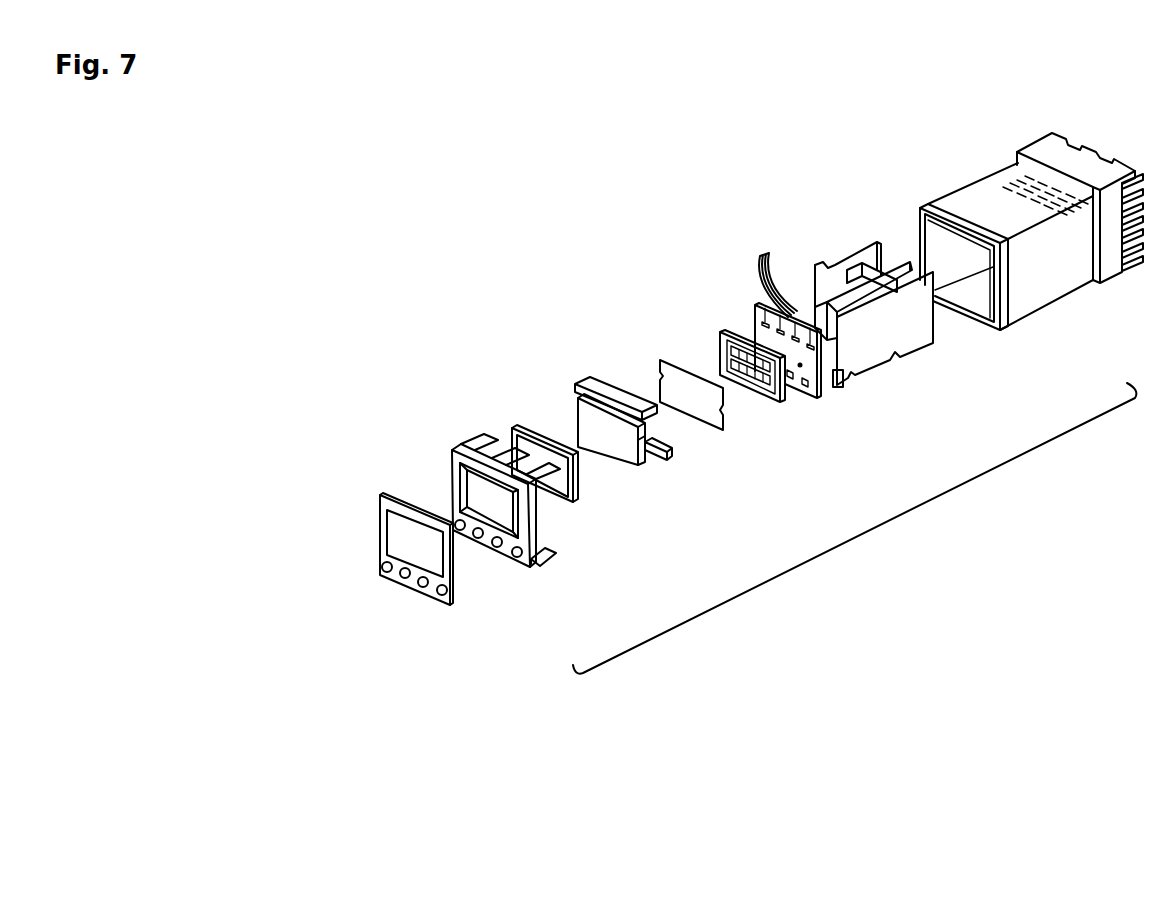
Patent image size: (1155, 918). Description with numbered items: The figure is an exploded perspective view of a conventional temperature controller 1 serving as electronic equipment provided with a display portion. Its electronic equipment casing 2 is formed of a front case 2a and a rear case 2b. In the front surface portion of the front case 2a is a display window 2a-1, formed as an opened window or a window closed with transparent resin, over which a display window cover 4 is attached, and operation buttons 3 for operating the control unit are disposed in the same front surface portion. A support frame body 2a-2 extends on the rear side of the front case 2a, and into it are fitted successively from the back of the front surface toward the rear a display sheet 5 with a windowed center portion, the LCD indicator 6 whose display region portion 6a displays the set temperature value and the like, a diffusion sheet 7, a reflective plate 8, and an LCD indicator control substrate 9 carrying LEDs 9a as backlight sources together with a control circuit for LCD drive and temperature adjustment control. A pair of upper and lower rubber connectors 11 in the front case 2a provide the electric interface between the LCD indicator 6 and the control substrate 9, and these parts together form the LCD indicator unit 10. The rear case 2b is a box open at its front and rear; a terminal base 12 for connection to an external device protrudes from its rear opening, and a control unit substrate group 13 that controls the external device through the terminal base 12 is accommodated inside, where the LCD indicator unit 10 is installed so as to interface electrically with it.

The temperature controller 1 is at (908, 181).
The electronic equipment casing 2 is at (858, 536).
The front case 2a is at (506, 548).
The display window 2a-1 is at (462, 490).
The support frame body 2a-2 is at (545, 560).
The rear case 2b is at (1033, 268).
The operation buttons 3 is at (517, 558).
The display window cover 4 is at (412, 593).
The display sheet 5 is at (570, 500).
The LCD indicator 6 is at (578, 455).
The display region portion 6a is at (583, 423).
The diffusion sheet 7 is at (719, 430).
The reflective plate 8 is at (786, 400).
The LCD indicator control substrate 9 is at (803, 356).
The LEDs 9a is at (777, 275).
The LCD indicator unit 10 is at (690, 280).
The rubber connectors 11 is at (587, 376).
The terminal base 12 is at (1138, 272).
The control unit substrate group 13 is at (905, 360).